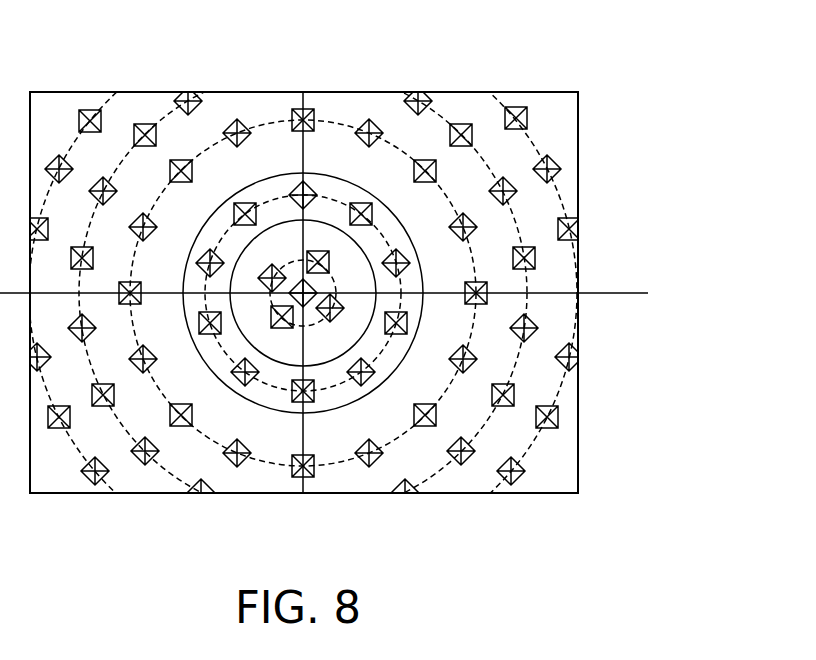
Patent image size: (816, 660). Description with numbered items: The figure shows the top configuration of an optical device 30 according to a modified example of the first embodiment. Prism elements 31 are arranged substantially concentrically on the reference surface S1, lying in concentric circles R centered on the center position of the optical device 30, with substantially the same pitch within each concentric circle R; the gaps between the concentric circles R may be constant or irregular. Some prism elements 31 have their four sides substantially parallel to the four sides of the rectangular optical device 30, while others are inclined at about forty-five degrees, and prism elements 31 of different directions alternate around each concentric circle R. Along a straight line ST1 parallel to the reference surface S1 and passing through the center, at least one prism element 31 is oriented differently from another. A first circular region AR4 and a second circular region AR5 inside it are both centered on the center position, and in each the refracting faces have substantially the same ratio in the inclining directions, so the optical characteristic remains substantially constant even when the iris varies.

The optical device 30 is at (99, 62).
The reference surface S1 is at (457, 98).
The prism element 31 is at (527, 118).
The straight line ST1 is at (623, 292).
The first circular region AR4 is at (233, 389).
The second circular region AR5 is at (363, 333).
The concentric circle R is at (332, 465).